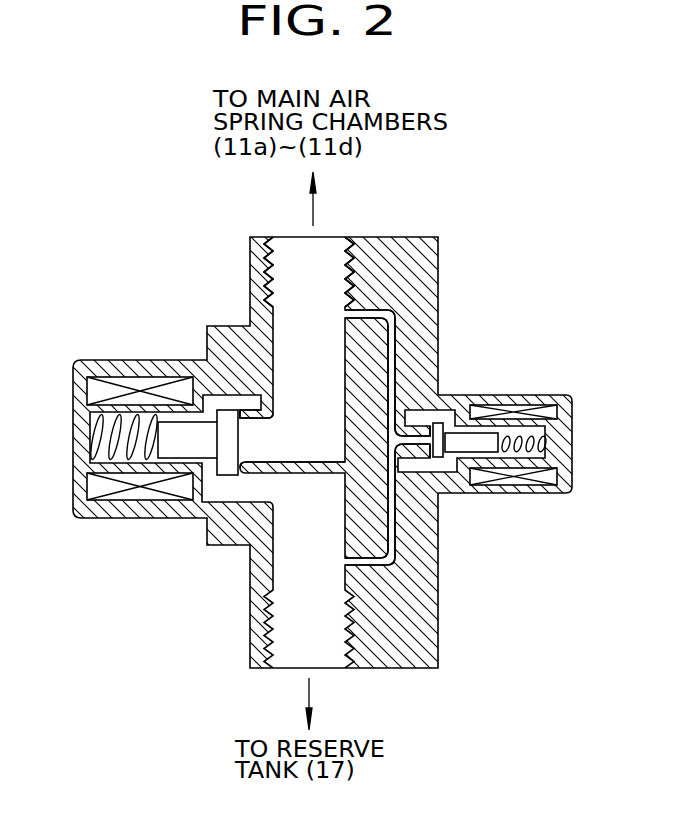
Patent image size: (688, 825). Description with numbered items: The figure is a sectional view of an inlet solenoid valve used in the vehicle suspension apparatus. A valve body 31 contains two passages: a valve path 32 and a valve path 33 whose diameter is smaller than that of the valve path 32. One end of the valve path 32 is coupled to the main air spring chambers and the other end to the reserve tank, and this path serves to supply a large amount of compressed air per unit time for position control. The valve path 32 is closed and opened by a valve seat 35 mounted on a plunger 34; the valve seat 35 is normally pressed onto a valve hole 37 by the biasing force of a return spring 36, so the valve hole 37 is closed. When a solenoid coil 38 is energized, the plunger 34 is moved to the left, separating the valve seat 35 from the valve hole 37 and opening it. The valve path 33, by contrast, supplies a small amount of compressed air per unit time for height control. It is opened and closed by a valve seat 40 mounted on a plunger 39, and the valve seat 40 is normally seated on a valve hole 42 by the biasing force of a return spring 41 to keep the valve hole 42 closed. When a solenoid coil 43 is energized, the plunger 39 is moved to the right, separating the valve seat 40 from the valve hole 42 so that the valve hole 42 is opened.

The valve body 31 is at (428, 276).
The valve path 32 is at (286, 281).
The valve path 33 is at (393, 334).
The plunger 34 is at (182, 452).
The valve seat 35 is at (222, 478).
The return spring 36 is at (93, 434).
The valve hole 37 is at (250, 440).
The solenoid coil 38 is at (132, 383).
The plunger 39 is at (483, 440).
The valve seat 40 is at (438, 460).
The return spring 41 is at (548, 439).
The valve hole 42 is at (436, 430).
The solenoid coil 43 is at (513, 485).